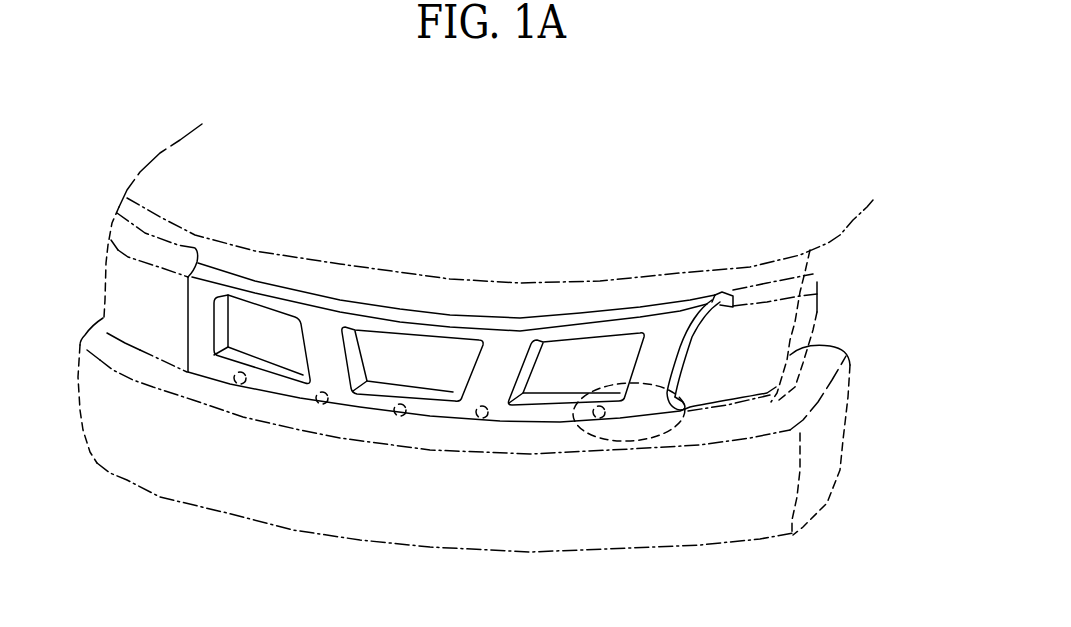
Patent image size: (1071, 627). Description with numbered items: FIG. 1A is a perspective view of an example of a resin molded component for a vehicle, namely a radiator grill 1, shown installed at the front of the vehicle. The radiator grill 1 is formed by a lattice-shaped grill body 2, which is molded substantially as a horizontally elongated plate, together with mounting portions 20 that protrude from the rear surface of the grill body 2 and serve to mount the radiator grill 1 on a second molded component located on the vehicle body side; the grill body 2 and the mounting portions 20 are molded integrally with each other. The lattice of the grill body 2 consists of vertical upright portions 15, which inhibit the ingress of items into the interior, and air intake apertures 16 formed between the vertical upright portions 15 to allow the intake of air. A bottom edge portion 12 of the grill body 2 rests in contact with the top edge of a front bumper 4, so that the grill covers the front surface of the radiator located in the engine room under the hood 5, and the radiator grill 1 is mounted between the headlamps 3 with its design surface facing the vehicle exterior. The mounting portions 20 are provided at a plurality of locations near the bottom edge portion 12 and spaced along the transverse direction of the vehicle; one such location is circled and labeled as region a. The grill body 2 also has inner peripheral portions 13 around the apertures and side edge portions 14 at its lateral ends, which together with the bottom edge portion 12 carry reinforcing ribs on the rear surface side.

The radiator grill 1 is at (466, 306).
The grill body 2 is at (520, 208).
The headlamps 3 is at (115, 285).
The front bumper 4 is at (836, 448).
The hood 5 is at (838, 225).
The bottom edge portion 12 is at (512, 418).
The inner peripheral portions 13 is at (424, 394).
The side edge portions 14 is at (688, 340).
The vertical upright portions 15 is at (513, 360).
The air intake apertures 16 is at (392, 350).
The mounting portions 20 is at (320, 401).
The region a is at (682, 435).